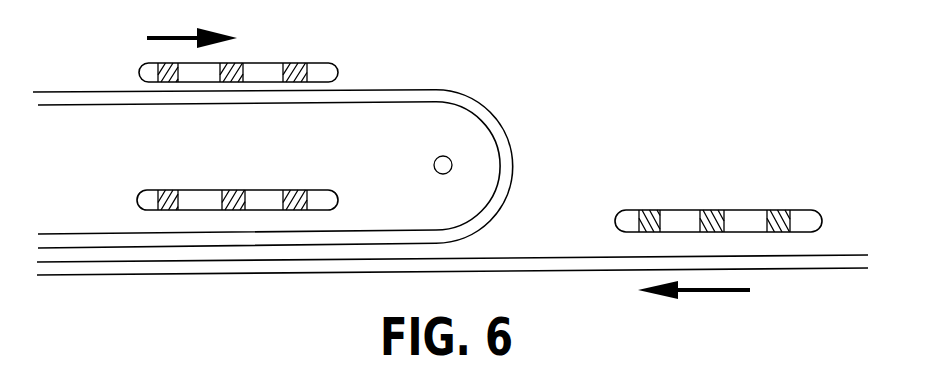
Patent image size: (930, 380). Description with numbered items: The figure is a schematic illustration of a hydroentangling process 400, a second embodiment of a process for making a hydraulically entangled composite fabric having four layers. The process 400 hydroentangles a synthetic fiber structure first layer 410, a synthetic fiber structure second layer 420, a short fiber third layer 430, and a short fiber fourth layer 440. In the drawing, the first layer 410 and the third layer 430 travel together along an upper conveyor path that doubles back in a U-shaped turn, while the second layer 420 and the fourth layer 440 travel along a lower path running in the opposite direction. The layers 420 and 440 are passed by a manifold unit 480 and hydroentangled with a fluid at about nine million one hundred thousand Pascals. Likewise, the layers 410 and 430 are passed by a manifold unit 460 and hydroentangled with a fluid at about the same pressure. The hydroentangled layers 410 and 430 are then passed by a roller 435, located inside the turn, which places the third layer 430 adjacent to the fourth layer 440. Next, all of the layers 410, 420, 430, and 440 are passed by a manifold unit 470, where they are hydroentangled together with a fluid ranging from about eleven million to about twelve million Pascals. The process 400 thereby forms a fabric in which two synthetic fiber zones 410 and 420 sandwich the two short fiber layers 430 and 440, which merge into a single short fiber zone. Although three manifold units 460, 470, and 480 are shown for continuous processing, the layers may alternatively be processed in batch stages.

The hydroentangling process 400 is at (563, 119).
The synthetic fiber structure first layer 410 is at (75, 105).
The synthetic fiber structure second layer 420 is at (853, 268).
The short fiber third layer 430 is at (47, 92).
The roller 435 is at (438, 156).
The short fiber fourth layer 440 is at (832, 254).
The manifold unit 460 is at (331, 70).
The manifold unit 470 is at (331, 197).
The manifold unit 480 is at (805, 210).